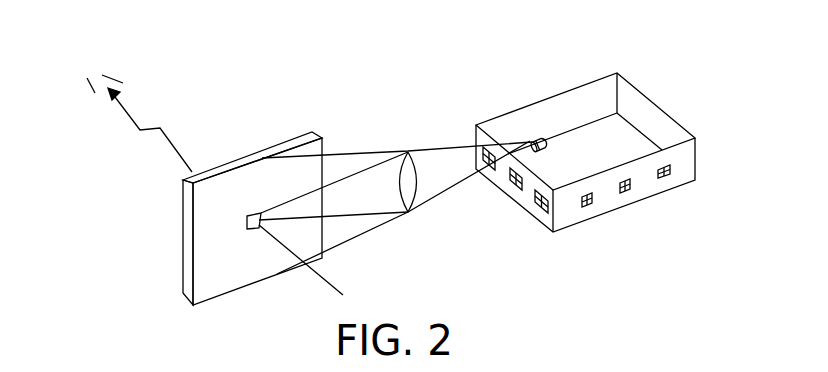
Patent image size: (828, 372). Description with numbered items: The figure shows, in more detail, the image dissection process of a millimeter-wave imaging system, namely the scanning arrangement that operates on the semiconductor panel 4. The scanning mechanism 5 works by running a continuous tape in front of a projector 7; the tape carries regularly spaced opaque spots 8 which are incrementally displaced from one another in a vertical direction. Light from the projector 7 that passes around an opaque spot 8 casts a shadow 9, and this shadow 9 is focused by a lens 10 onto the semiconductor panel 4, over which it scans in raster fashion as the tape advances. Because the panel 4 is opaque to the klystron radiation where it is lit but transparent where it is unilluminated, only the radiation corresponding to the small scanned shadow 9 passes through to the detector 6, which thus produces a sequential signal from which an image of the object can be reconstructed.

The semiconductor panel 4 is at (190, 237).
The scanning mechanism 5 is at (641, 92).
The detector 6 is at (112, 75).
The projector 7 is at (545, 136).
The opaque spots 8 is at (513, 184).
The shadow 9 is at (247, 223).
The lens 10 is at (402, 152).